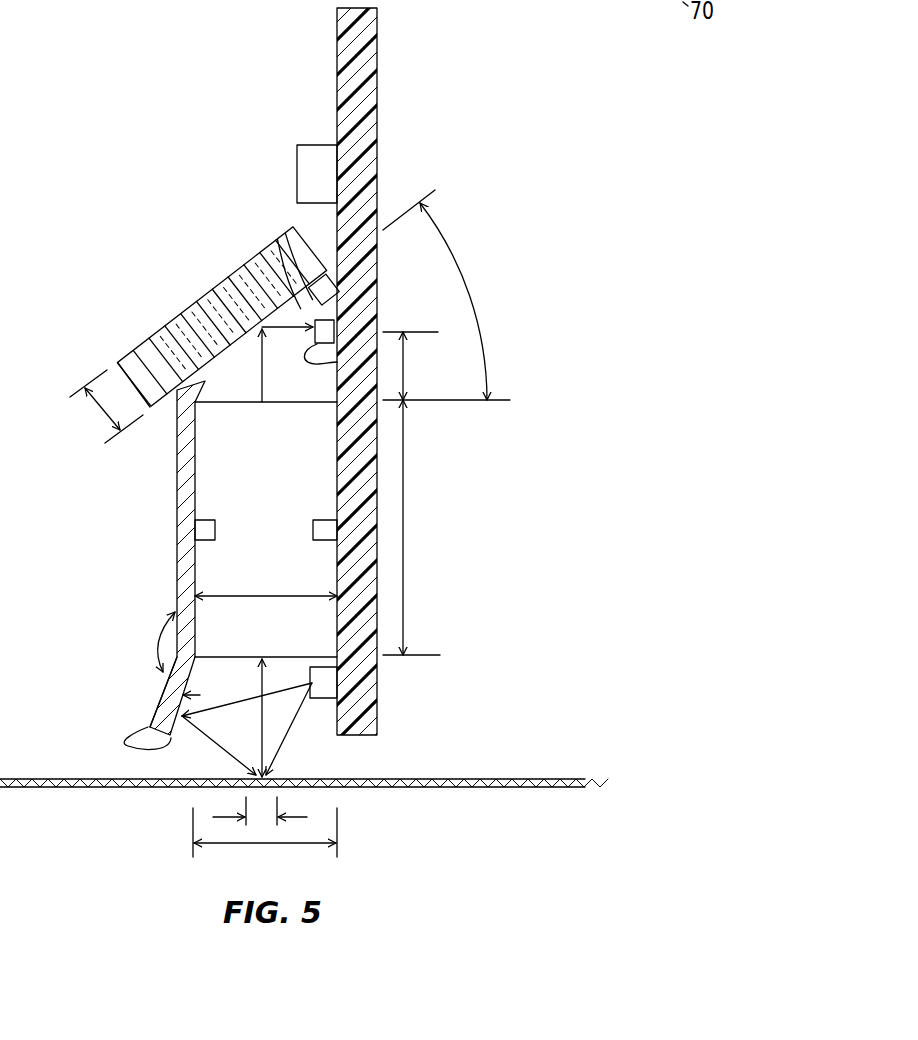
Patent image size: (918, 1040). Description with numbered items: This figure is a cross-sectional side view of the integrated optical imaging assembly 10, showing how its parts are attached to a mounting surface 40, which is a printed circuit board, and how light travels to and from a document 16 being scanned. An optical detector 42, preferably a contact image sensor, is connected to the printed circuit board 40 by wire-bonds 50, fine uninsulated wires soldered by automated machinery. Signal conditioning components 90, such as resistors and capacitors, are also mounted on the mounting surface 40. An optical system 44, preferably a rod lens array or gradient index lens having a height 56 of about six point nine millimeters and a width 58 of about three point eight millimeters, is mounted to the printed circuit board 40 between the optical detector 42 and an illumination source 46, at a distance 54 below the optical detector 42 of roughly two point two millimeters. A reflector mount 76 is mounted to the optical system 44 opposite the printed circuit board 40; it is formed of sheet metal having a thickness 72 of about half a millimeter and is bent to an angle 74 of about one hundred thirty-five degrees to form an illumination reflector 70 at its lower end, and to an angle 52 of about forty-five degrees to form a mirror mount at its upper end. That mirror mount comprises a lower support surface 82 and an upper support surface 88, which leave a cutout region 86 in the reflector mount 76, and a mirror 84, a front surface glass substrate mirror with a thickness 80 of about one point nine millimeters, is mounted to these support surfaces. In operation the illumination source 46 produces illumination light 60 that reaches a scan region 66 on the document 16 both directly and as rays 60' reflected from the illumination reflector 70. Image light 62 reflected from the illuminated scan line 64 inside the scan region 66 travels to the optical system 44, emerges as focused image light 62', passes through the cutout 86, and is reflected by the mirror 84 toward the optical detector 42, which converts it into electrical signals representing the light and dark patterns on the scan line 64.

The integrated optical imaging assembly 10 is at (152, 126).
The document 16 is at (481, 778).
The mounting surface 40 is at (378, 69).
The optical detector 42 is at (326, 318).
The optical system 44 is at (276, 501).
The illumination source 46 is at (323, 682).
The wire-bonds 50 is at (333, 364).
The angle 52 is at (472, 294).
The distance 54 is at (405, 366).
The height 56 is at (405, 520).
The width 58 is at (268, 598).
The illumination light 60 is at (247, 719).
The illumination light rays reflecting from the illumination reflector 60' is at (219, 748).
The image light 62 is at (237, 718).
The focused and directed image light 62' is at (236, 365).
The scan line 64 is at (240, 817).
The scan region 66 is at (258, 846).
The illumination reflector 70 is at (150, 740).
The thickness 72 is at (158, 688).
The angle 74 is at (157, 640).
The reflector mount 76 is at (177, 526).
The thickness 80 is at (90, 410).
The lower support surface 82 is at (148, 340).
The mirror 84 is at (203, 283).
The cutout region 86 is at (256, 256).
The upper support surface 88 is at (280, 238).
The signal conditioning components 90 is at (297, 155).